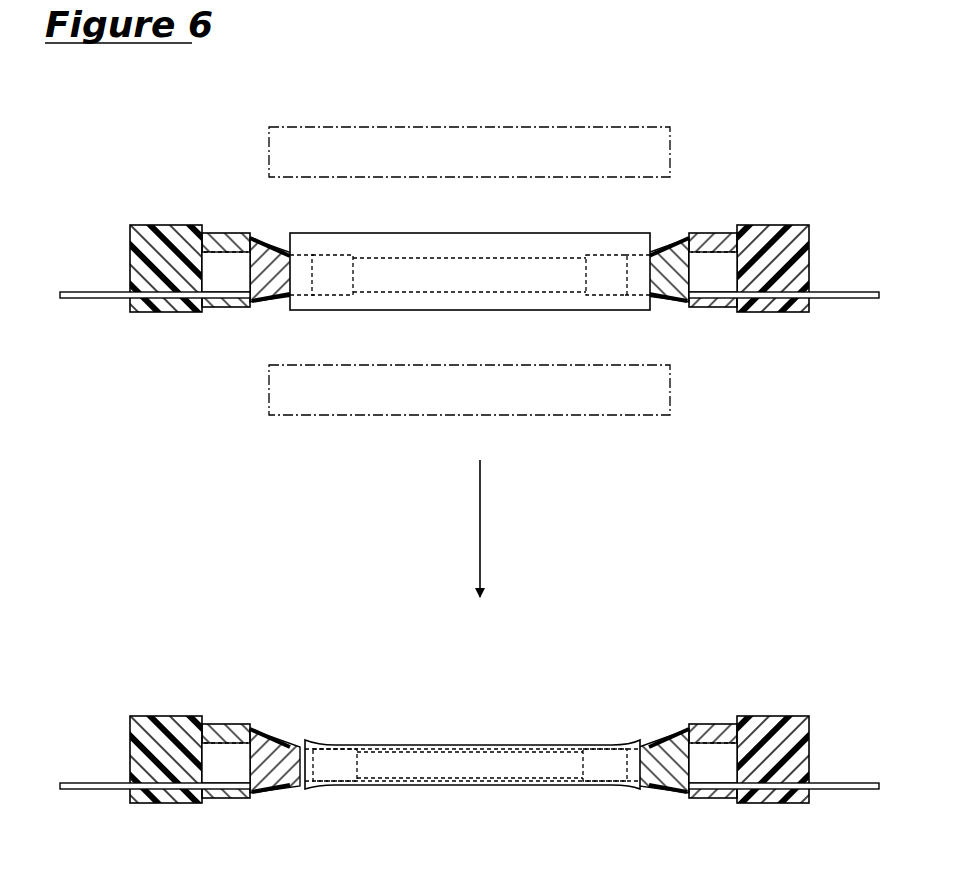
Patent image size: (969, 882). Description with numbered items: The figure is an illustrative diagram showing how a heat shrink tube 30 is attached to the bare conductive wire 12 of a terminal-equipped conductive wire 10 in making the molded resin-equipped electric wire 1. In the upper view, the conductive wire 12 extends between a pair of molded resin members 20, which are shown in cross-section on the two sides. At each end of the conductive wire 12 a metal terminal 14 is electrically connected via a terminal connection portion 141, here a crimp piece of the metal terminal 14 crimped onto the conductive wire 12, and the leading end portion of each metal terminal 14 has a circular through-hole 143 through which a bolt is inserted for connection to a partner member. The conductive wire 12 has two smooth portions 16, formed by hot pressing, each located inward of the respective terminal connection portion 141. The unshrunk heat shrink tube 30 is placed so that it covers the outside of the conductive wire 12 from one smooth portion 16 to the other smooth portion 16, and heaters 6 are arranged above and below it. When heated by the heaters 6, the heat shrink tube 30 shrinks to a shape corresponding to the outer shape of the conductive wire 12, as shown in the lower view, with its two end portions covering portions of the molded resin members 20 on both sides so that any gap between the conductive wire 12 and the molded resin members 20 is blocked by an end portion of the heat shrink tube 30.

The molded resin-equipped electric wire 1 is at (232, 687).
The heater 6 is at (452, 127).
The terminal-equipped conductive wire 10 is at (440, 251).
The conductive wire 12 is at (572, 257).
The metal terminal 14 is at (104, 291).
The smooth portion 16 is at (332, 256).
The molded resin member 20 is at (164, 234).
The heat shrink tube 30 is at (503, 745).
The terminal connection portion 141 is at (229, 286).
The through-hole 143 is at (88, 300).